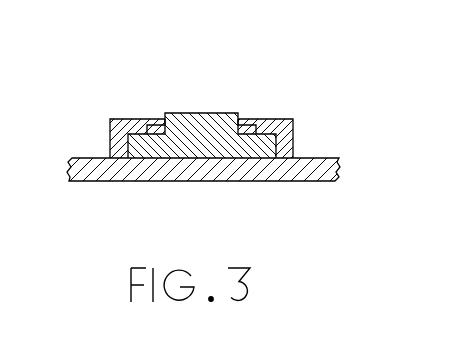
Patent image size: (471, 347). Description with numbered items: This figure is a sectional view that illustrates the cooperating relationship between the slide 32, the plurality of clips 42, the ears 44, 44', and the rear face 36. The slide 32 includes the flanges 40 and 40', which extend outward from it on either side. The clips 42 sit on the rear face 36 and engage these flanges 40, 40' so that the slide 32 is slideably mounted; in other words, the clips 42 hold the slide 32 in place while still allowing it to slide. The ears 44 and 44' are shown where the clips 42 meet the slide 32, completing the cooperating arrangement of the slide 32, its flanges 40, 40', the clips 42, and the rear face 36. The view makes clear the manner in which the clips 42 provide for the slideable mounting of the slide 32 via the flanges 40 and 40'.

The slide 32 is at (193, 113).
The rear face 36 is at (80, 158).
The flange 40 is at (141, 93).
The flange 40' is at (273, 105).
The clip 42 is at (115, 119).
The ear 44 is at (169, 92).
The ear 44' is at (237, 91).